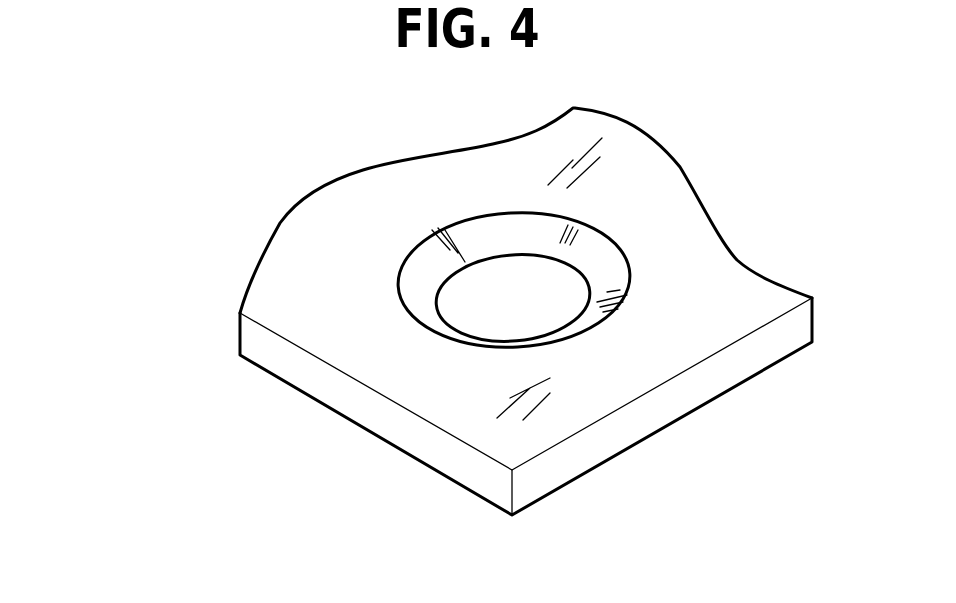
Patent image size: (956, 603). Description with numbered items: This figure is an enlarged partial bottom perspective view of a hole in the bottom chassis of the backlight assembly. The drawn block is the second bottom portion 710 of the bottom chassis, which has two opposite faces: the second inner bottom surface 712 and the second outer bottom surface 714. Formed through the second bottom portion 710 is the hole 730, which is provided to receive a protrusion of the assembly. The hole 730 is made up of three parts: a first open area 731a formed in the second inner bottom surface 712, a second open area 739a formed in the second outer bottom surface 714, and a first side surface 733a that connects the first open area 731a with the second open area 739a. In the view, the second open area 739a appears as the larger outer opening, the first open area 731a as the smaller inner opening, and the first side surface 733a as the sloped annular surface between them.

The second bottom portion 710 is at (464, 311).
The second outer bottom surface 714 is at (337, 370).
The second inner bottom surface 712 is at (347, 425).
The hole 730 is at (566, 211).
The first open area 731a is at (513, 257).
The second open area 739a is at (593, 228).
The first side surface 733a is at (603, 273).